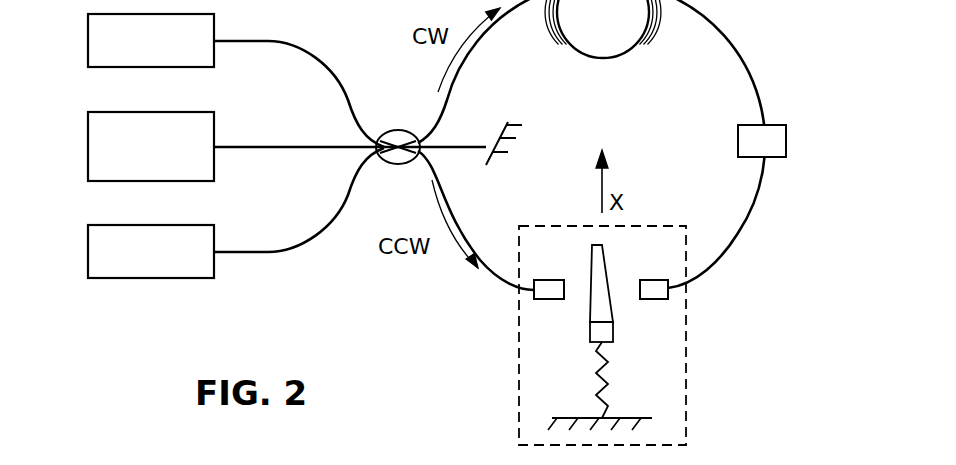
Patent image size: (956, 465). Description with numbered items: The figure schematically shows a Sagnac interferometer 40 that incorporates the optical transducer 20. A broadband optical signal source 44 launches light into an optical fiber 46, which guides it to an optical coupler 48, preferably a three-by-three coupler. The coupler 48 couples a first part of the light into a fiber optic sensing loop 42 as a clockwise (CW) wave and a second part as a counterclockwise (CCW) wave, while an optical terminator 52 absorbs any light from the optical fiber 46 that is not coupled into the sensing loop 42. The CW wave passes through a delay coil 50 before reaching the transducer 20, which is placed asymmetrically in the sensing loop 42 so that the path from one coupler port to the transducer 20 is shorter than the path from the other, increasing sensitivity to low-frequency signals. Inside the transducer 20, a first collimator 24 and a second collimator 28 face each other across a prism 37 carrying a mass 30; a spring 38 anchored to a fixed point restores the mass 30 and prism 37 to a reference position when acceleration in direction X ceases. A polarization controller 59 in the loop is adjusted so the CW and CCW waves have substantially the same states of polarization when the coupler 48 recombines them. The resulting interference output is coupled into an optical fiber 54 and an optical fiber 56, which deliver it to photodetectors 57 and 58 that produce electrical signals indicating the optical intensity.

The optical transducer 20 is at (519, 323).
The first collimator 24 is at (545, 280).
The second collimator 28 is at (653, 300).
The mass 30 is at (588, 332).
The prism 37 is at (605, 268).
The spring 38 is at (606, 386).
The Sagnac interferometer 40 is at (291, 292).
The fiber optic sensing loop 42 is at (743, 227).
The broadband optical signal source 44 is at (88, 142).
The optical fiber 46 is at (298, 144).
The optical coupler 48 is at (395, 129).
The delay coil 50 is at (660, 23).
The optical terminator 52 is at (532, 140).
The optical fiber 54 is at (257, 43).
The optical fiber 56 is at (253, 252).
The photodetector 57 is at (88, 43).
The photodetector 58 is at (88, 253).
The polarization controller 59 is at (786, 141).